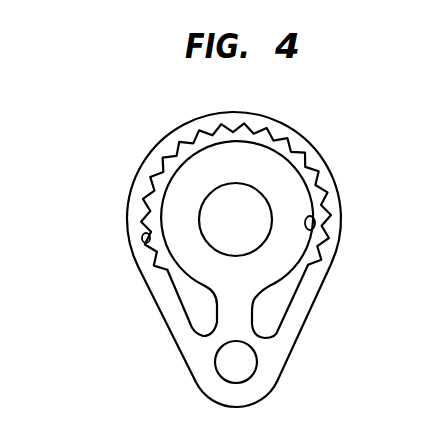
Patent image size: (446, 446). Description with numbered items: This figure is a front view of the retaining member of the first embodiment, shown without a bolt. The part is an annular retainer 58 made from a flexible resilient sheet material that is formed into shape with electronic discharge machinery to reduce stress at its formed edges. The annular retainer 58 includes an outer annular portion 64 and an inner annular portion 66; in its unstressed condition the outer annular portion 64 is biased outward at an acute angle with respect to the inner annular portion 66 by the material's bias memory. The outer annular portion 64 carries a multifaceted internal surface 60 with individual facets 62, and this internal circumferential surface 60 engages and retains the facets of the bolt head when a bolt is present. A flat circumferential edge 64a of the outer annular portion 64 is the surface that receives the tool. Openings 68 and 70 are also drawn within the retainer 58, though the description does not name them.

The annular retainer 58 is at (112, 218).
The multifaceted internal surface 60 is at (310, 232).
The individual facets 62 is at (143, 248).
The outer annular portion 64 is at (158, 146).
The flat circumferential edge 64a is at (247, 118).
The inner annular portion 66 is at (216, 279).
The central bore 68 is at (215, 232).
The pin hole 70 is at (232, 367).